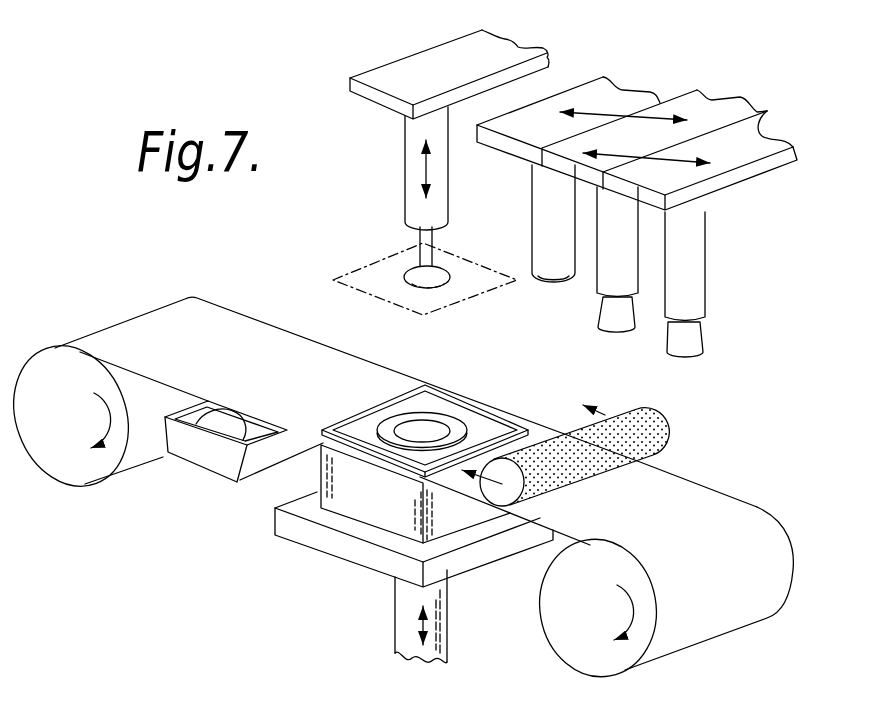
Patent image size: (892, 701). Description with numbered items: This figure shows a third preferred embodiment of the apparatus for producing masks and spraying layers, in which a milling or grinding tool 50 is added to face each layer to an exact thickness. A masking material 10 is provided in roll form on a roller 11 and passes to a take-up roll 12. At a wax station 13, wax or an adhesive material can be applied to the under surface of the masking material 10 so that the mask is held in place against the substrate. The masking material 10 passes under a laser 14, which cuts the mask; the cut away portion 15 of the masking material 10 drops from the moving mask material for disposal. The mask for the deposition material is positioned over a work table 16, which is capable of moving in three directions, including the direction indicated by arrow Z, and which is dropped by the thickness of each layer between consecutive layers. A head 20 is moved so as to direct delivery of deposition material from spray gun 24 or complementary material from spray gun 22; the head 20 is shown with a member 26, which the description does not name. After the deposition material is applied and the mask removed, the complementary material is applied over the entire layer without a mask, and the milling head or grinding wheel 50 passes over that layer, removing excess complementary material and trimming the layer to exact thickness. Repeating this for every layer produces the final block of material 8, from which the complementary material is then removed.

The masking material 10 is at (262, 340).
The roller 11 is at (43, 453).
The take-up roll 12 is at (563, 600).
The wax station 13 is at (210, 460).
The block of material 8 is at (380, 502).
The work table 16 is at (345, 543).
The arrow z Z is at (422, 628).
The milling or grinding tool 50 is at (640, 440).
The head 20 is at (457, 58).
The pick-up head 26 is at (413, 157).
The cut away portion 15 is at (373, 273).
The laser 14 is at (542, 220).
The spray gun 22 is at (613, 262).
The spray gun 24 is at (693, 273).